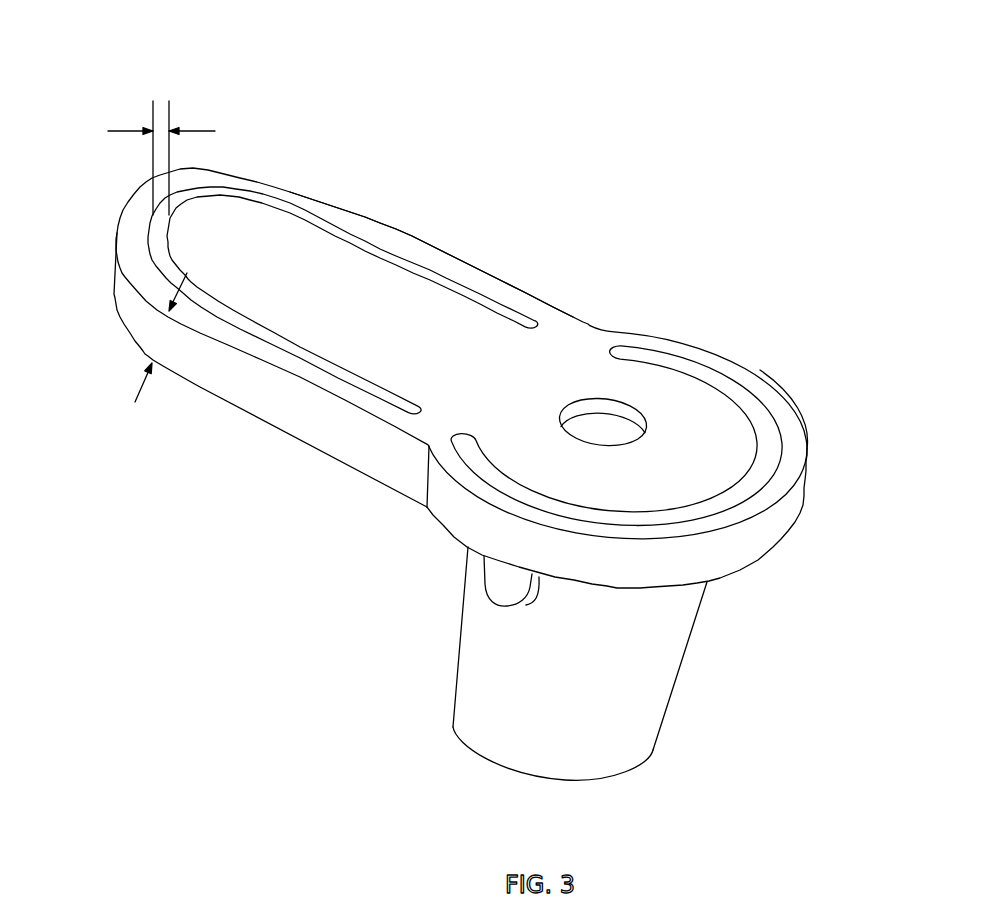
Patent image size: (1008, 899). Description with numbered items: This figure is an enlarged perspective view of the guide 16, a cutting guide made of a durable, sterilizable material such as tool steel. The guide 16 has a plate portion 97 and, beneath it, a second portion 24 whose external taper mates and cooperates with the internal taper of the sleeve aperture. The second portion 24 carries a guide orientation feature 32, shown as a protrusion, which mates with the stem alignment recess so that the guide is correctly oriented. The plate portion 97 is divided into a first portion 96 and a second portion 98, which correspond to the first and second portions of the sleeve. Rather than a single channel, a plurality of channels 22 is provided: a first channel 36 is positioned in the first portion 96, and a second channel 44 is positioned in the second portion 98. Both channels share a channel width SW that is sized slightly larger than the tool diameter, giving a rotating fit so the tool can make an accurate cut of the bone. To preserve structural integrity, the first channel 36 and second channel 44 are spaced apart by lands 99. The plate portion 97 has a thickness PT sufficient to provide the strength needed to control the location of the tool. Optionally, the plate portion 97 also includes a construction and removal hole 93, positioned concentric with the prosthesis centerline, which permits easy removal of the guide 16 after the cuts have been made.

The guide 16 is at (476, 401).
The second portion of the plate portion 98 is at (390, 208).
The second channel 44 is at (413, 240).
The channels 22 is at (467, 288).
The lands 99 is at (580, 337).
The plate portion 97 is at (243, 405).
The first channel 36 is at (790, 455).
The first portion of the plate portion 96 is at (793, 407).
The construction and removal hole 93 is at (647, 427).
The guide orientation feature 32 is at (488, 605).
The second portion 24 is at (727, 727).
The channel width SW is at (193, 132).
The thickness PT is at (135, 400).